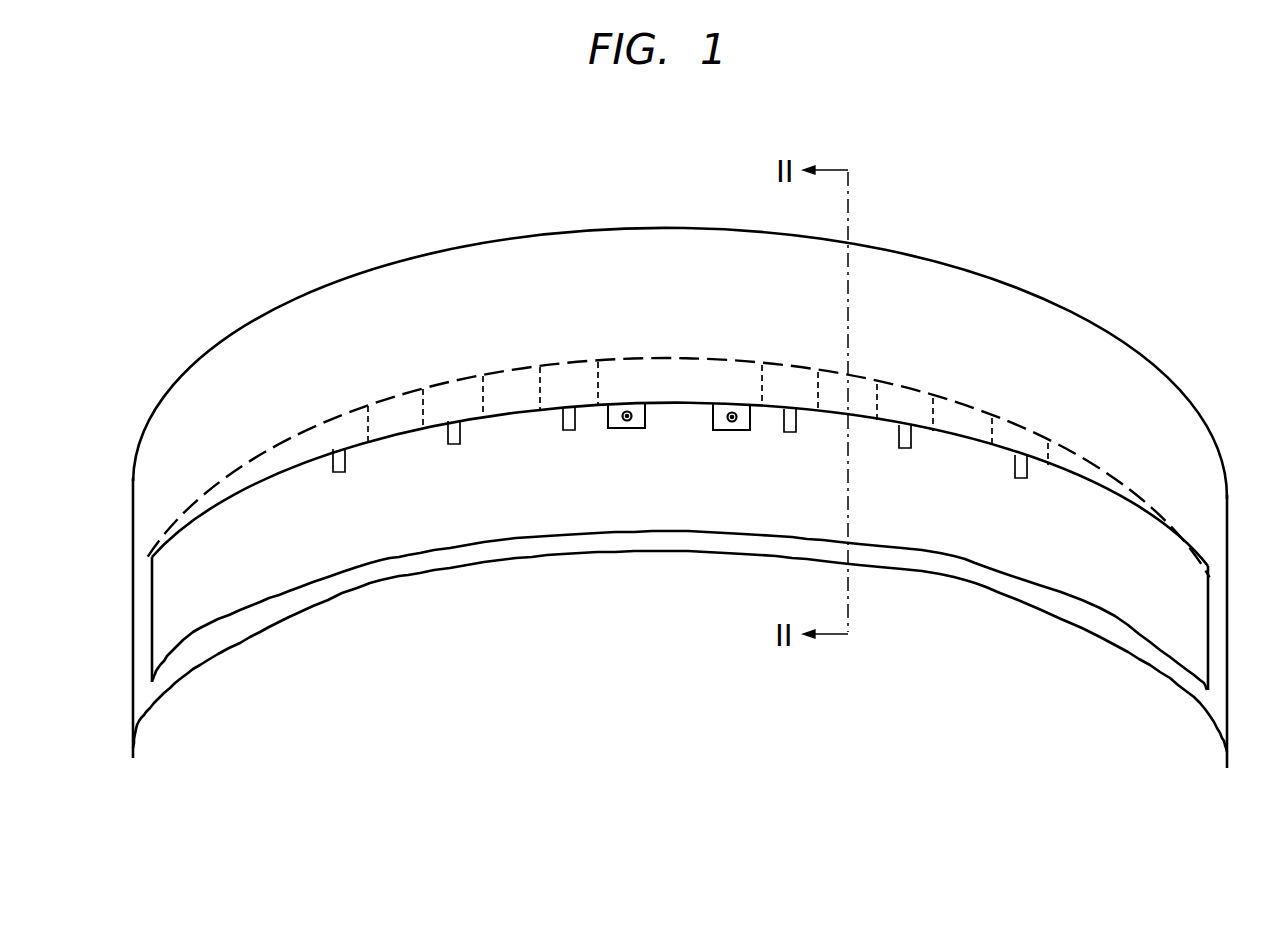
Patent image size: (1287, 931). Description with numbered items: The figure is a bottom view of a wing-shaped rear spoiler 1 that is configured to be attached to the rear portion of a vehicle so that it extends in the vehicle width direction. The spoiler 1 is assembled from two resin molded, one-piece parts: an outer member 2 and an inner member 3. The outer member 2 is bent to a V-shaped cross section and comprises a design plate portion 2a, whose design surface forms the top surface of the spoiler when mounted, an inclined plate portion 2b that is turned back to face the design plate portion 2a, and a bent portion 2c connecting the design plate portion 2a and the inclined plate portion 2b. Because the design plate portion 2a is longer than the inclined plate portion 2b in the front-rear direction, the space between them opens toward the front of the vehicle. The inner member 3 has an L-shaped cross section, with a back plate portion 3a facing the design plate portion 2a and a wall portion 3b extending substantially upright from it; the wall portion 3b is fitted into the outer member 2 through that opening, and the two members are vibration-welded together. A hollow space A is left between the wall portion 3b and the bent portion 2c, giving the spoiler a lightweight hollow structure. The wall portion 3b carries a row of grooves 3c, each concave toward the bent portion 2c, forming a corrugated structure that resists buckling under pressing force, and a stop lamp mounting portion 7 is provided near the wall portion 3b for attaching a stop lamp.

The spoiler 1 is at (1161, 237).
The outer member 2 is at (252, 362).
The design plate portion 2a is at (1213, 702).
The inclined plate portion 2b is at (462, 347).
The bent portion 2c is at (697, 253).
The inner member 3 is at (200, 587).
The back plate portion 3a is at (993, 540).
The wall portion 3b is at (682, 366).
The grooves 3c is at (408, 392).
The stop lamp mounting portion 7 is at (613, 428).
The hollow space A is at (965, 307).